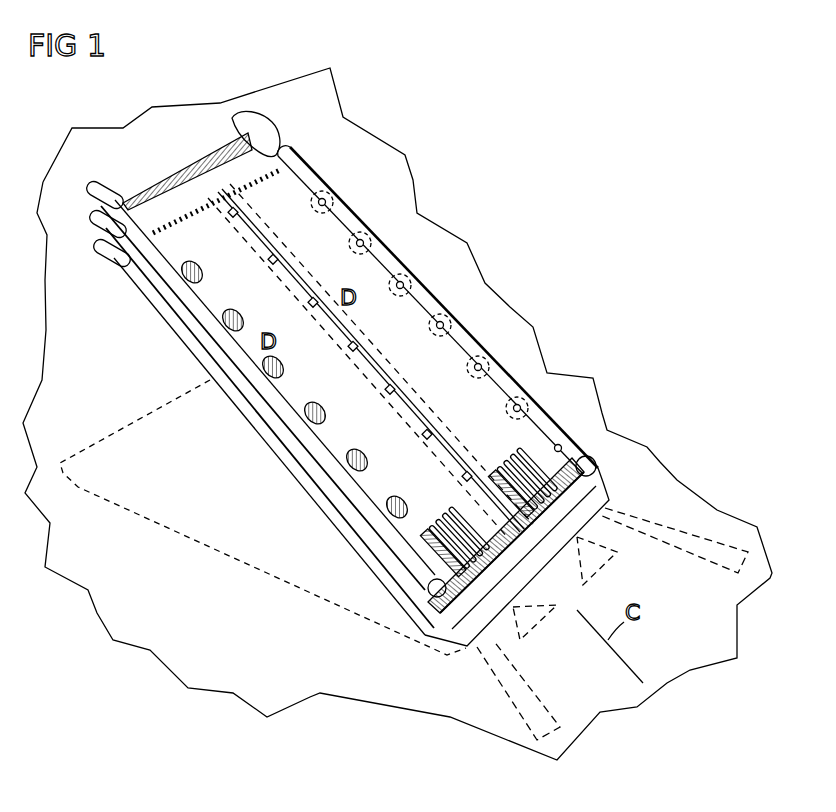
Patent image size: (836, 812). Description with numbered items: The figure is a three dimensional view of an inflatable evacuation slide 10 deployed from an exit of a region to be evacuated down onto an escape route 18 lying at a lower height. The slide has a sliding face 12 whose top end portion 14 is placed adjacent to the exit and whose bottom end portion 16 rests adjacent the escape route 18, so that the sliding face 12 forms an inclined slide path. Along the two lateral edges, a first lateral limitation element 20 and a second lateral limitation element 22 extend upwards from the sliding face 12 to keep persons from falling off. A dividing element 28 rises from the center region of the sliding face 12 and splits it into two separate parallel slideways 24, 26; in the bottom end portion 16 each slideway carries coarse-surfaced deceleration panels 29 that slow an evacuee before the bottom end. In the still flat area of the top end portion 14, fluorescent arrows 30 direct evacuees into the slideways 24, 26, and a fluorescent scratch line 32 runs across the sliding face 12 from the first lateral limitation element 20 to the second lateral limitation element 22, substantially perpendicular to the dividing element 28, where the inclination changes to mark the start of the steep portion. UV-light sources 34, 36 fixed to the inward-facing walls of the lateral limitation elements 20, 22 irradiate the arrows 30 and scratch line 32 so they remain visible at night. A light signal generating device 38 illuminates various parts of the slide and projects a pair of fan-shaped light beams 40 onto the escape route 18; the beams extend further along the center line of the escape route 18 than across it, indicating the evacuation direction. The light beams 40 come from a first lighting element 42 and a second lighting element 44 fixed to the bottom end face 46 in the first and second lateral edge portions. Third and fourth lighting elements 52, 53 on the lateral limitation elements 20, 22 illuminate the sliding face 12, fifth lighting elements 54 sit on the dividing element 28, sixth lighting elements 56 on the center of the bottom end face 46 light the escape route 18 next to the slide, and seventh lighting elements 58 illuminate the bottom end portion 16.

The evacuation slide 10 is at (528, 214).
The sliding face 12 is at (377, 264).
The top end portion 14 is at (300, 143).
The bottom end portion 16 is at (610, 456).
The escape route 18 is at (665, 678).
The first lateral limitation element 20 is at (312, 452).
The second lateral limitation element 22 is at (490, 368).
The first slideway 24 is at (203, 298).
The second slideway 26 is at (420, 303).
The dividing element 28 is at (414, 412).
The deceleration panels 29 is at (513, 464).
The arrows 30 is at (176, 190).
The scratch line 32 is at (268, 194).
The UV-light source 34 is at (118, 196).
The UV-light source 36 is at (250, 142).
The light signal generating device 38 is at (497, 286).
The light beams 40 is at (724, 545).
The first lighting element 42 is at (467, 648).
The second lighting element 44 is at (616, 502).
The bottom end face 46 is at (614, 550).
The third lighting elements 52 is at (277, 366).
The fourth lighting elements 53 is at (346, 203).
The fifth lighting elements 54 is at (390, 388).
The sixth lighting elements 56 is at (548, 611).
The seventh lighting elements 58 is at (580, 455).